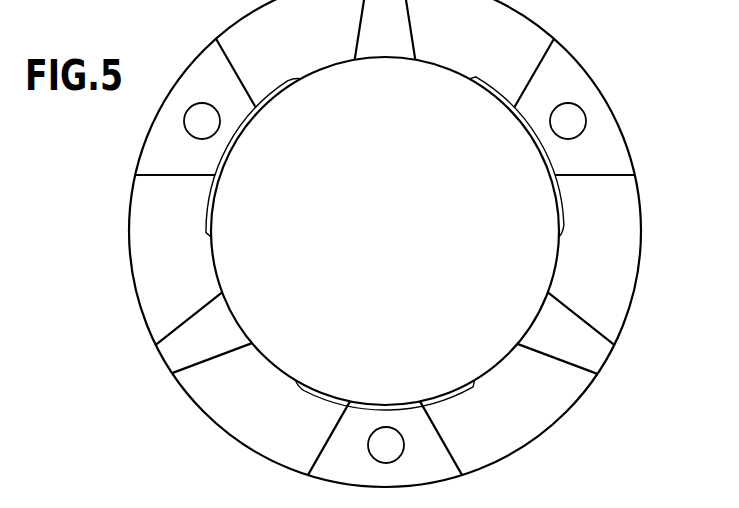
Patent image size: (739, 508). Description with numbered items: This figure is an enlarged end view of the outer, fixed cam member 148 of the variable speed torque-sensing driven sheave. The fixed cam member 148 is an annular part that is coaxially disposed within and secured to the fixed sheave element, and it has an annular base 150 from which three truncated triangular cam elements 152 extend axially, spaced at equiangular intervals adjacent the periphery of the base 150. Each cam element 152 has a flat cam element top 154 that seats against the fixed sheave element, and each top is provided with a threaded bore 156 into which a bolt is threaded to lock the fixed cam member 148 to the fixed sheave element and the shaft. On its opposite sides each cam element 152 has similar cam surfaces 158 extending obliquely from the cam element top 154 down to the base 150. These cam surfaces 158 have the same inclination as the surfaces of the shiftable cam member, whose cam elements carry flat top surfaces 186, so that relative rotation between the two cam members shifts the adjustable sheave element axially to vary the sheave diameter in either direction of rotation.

The fixed cam member 148 is at (641, 264).
The annular base 150 is at (593, 356).
The truncated triangular cam elements 152 is at (201, 50).
The cam element top 154 is at (578, 74).
The threaded bore 156 is at (398, 445).
The cam surfaces 158 is at (275, 413).
The flat top surfaces 186 is at (516, 500).